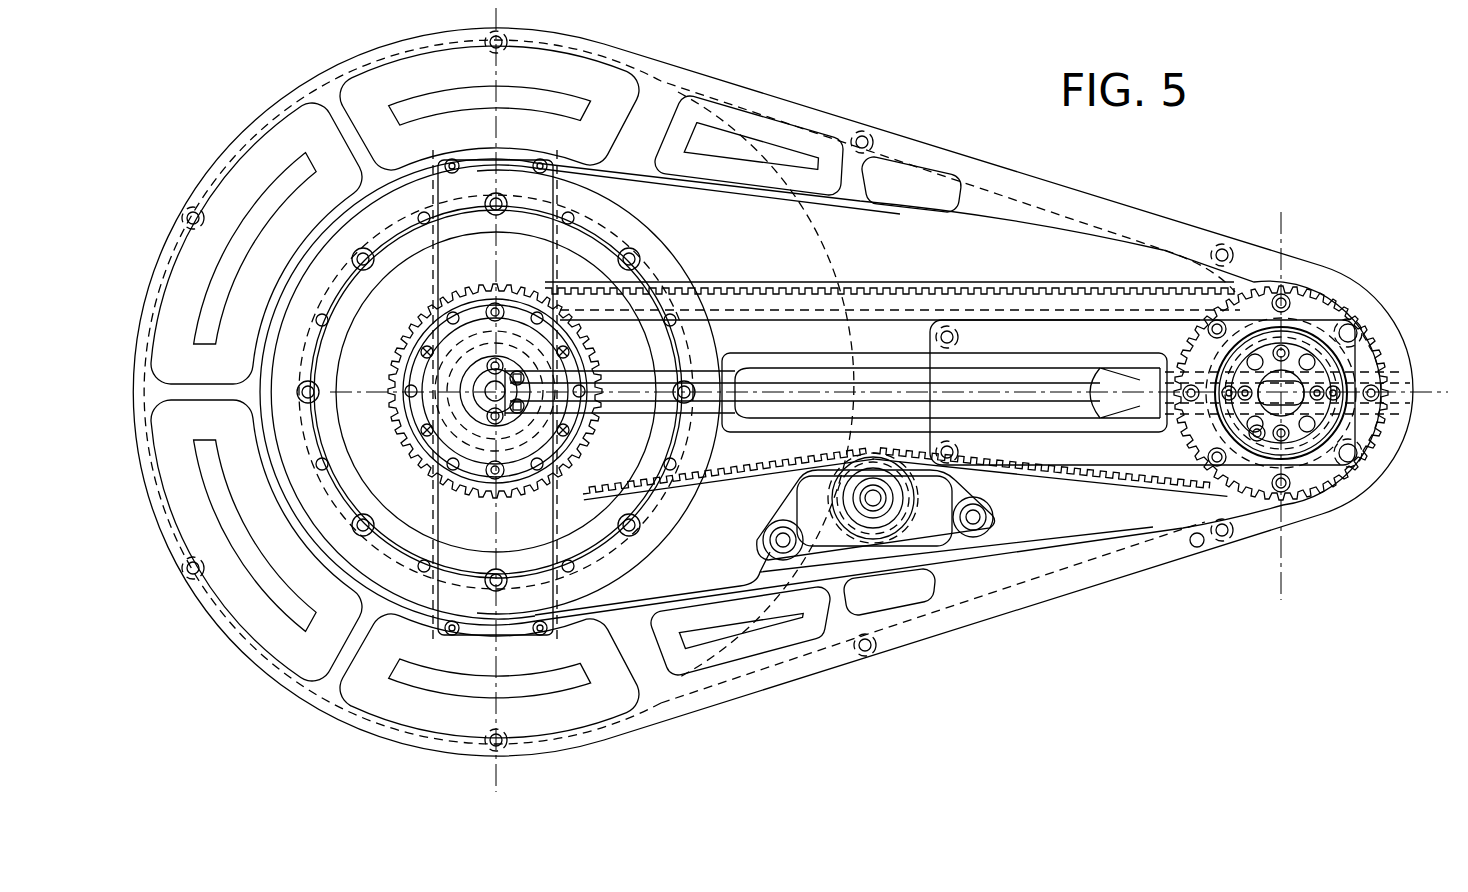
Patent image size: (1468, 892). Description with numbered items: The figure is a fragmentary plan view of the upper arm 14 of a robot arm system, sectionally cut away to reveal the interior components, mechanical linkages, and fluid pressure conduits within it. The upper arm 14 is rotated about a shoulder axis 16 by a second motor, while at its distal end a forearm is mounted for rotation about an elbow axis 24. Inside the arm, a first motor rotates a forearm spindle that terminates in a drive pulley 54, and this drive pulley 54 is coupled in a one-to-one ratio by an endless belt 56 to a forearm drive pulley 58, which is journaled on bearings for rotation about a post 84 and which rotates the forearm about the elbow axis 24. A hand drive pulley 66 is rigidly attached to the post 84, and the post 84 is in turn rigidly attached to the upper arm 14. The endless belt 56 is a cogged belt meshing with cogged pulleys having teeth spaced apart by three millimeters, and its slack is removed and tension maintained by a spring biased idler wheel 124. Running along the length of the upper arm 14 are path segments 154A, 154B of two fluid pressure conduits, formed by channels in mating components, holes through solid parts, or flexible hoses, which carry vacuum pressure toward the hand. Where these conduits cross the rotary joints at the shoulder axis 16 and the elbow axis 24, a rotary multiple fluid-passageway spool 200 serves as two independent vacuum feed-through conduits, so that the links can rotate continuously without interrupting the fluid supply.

The upper arm 14 is at (680, 80).
The shoulder axis 16 is at (412, 418).
The elbow axis 24 is at (1392, 440).
The drive pulley 54 is at (590, 350).
The endless belt 56 is at (1118, 282).
The forearm drive pulley 58 is at (1302, 318).
The hand drive pulley 66 is at (1372, 362).
The post 84 is at (1257, 440).
The spring biased idler wheel 124 is at (878, 542).
The path segment 154A is at (768, 372).
The path segment 154B is at (757, 418).
The rotary multiple fluid-passageway spool 200 is at (483, 366).